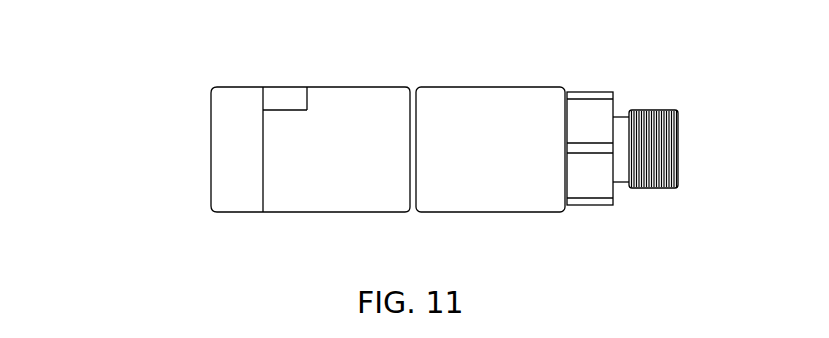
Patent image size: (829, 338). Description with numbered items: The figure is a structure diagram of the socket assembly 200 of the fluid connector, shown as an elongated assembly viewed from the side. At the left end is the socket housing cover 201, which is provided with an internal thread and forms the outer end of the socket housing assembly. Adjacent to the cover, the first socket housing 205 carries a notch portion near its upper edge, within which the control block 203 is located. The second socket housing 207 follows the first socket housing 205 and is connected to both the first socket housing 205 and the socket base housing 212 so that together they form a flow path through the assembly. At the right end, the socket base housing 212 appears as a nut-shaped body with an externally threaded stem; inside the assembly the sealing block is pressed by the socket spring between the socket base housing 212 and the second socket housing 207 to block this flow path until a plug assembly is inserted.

The socket assembly 200 is at (80, 33).
The socket housing cover 201 is at (232, 87).
The control block 203 is at (283, 87).
The first socket housing 205 is at (352, 87).
The second socket housing 207 is at (473, 87).
The socket base housing 212 is at (593, 92).